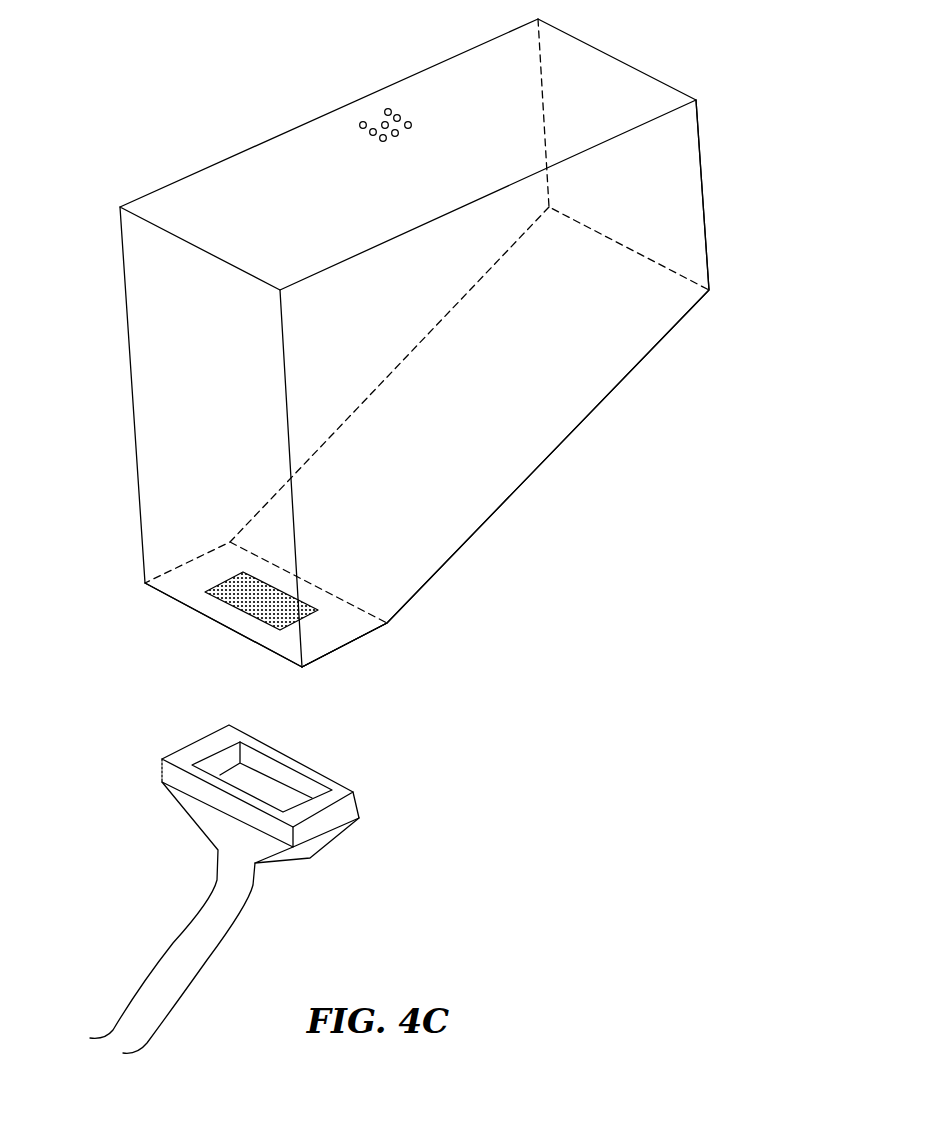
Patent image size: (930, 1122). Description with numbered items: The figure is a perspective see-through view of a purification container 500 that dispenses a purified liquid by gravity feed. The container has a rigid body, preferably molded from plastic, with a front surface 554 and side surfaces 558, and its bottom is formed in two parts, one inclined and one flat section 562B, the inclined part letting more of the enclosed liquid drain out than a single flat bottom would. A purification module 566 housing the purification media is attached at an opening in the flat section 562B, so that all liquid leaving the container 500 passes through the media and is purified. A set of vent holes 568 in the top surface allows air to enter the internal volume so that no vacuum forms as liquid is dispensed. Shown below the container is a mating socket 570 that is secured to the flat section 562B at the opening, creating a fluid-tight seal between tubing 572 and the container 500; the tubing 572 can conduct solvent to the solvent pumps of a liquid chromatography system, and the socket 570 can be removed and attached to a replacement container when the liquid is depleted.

The purification container 500 is at (66, 93).
The front surface 554 is at (170, 362).
The side surfaces 558 is at (608, 347).
The flat section 562B is at (340, 647).
The purification module 566 is at (258, 598).
The vent holes 568 is at (380, 118).
The mating socket 570 is at (353, 792).
The tubing 572 is at (162, 958).